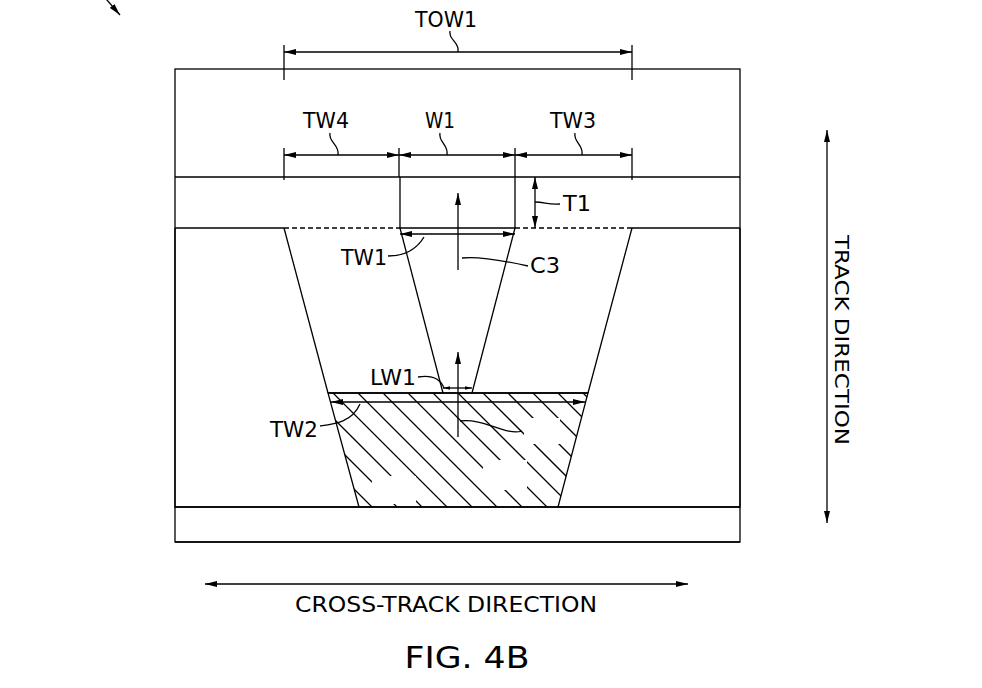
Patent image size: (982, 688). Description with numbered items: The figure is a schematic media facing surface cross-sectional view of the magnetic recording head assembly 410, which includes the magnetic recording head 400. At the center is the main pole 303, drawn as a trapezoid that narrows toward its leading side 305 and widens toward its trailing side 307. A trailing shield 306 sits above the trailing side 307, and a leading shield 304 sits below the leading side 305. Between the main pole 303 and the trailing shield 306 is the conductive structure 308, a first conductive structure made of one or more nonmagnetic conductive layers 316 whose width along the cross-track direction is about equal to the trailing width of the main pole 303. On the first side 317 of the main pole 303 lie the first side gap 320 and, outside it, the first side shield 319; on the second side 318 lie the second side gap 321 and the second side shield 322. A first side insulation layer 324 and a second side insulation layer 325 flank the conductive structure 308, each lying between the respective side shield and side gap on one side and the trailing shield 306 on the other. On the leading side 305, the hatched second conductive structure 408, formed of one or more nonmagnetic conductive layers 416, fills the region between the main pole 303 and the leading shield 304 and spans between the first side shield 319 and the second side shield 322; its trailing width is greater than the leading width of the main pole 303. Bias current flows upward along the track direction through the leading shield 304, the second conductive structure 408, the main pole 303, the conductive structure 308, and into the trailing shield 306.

The magnetic recording head 400 is at (165, 100).
The magnetic recording head assembly 410 is at (122, 687).
The main pole 303 is at (437, 330).
The leading shield 304 is at (568, 538).
The leading side 305 is at (441, 411).
The trailing shield 306 is at (418, 102).
The trailing side 307 is at (474, 221).
The conductive structure 308 is at (398, 195).
The conductive layers 316 is at (407, 208).
The first side 317 is at (504, 297).
The second side 318 is at (410, 293).
The first side shield 319 is at (664, 383).
The first side gap 320 is at (528, 360).
The second side gap 321 is at (352, 355).
The second side shield 322 is at (217, 387).
The first side insulation layer 324 is at (612, 210).
The second side insulation layer 325 is at (247, 208).
The second conductive structure 408 is at (378, 438).
The conductive layers 416 is at (485, 488).